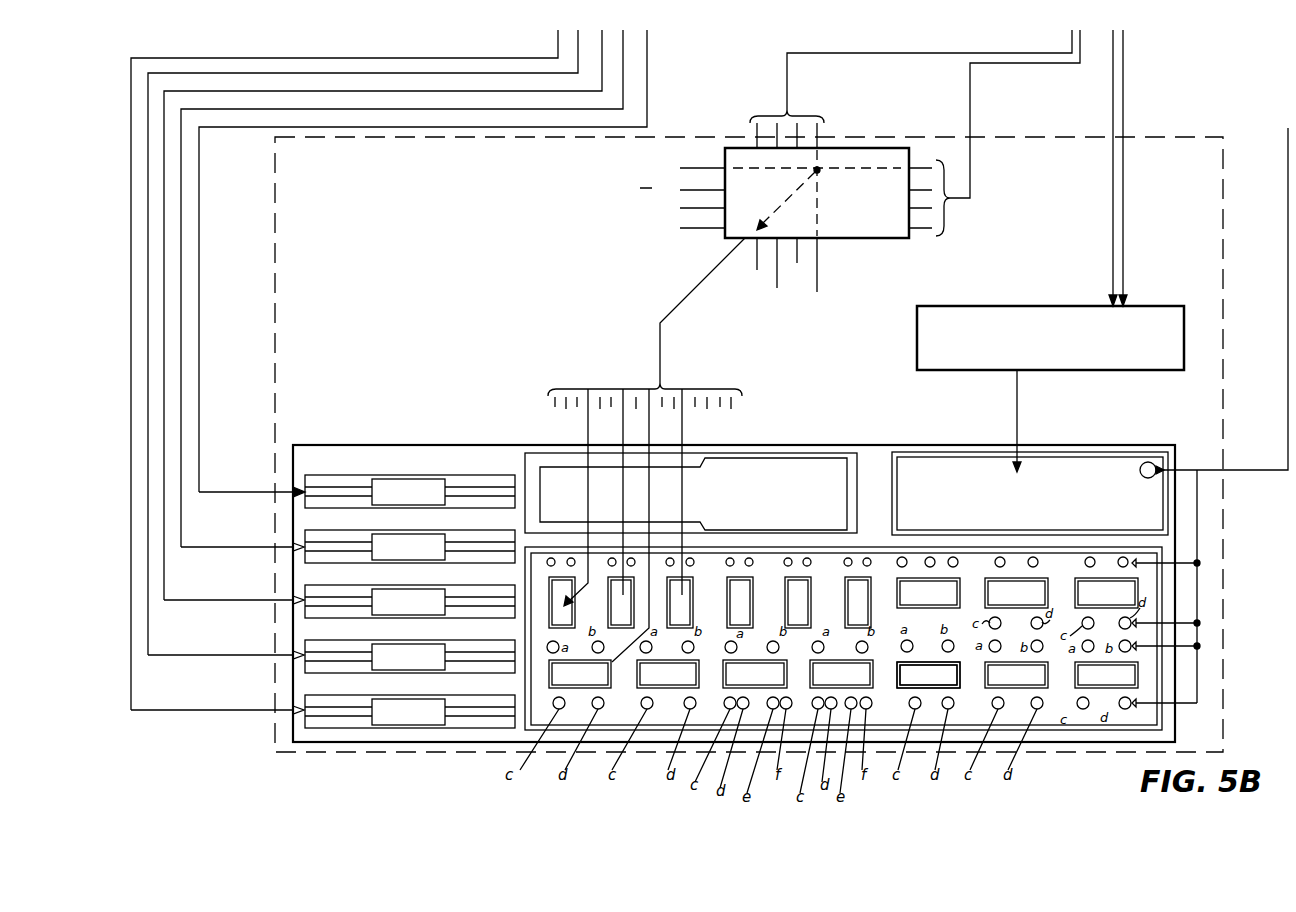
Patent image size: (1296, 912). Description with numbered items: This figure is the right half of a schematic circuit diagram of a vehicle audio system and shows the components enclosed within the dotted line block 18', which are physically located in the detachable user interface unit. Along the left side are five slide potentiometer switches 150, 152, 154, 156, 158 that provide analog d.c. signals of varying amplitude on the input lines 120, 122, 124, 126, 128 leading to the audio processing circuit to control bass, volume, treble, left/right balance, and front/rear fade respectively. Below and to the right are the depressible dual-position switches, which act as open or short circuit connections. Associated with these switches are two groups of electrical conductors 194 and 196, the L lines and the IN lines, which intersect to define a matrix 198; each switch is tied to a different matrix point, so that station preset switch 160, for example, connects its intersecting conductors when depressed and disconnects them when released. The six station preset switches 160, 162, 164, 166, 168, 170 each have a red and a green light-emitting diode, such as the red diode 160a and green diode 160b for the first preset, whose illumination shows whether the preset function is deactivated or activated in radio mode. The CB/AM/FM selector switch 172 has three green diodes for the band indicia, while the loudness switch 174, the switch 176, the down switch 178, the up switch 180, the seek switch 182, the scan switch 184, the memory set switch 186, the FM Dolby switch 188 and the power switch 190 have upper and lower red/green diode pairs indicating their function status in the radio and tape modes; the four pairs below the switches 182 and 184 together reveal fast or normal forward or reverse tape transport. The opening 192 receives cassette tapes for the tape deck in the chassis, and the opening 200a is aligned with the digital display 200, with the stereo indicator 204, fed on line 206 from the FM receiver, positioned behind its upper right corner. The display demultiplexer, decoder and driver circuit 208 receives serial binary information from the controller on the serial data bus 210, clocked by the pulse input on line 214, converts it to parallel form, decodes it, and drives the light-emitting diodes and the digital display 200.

The dotted line block 18' is at (759, 416).
The line 120 is at (190, 666).
The line 122 is at (183, 720).
The line 124 is at (257, 598).
The line 126 is at (210, 556).
The line 128 is at (236, 490).
The slide potentiometer switch 150 is at (410, 491).
The slide potentiometer switch 152 is at (410, 546).
The slide potentiometer switch 154 is at (410, 601).
The slide potentiometer switch 156 is at (410, 656).
The slide potentiometer switch 158 is at (410, 711).
The station preset switch 160 is at (550, 588).
The red light-emitting diode 160a is at (550, 557).
The green light-emitting diode 160b is at (570, 557).
The station preset switch 162 is at (631, 557).
The station preset switch 164 is at (690, 557).
The station preset switch 166 is at (749, 557).
The station preset switch 168 is at (807, 557).
The station preset switch 170 is at (867, 557).
The CB/AM/FM selector switch 172 is at (908, 524).
The loudness switch 174 is at (1014, 526).
The switch 176 is at (1100, 526).
The down switch 178 is at (580, 684).
The up switch 180 is at (668, 684).
The seek switch 182 is at (757, 684).
The scan switch 184 is at (841, 684).
The memory set switch 186 is at (928, 685).
The FM Dolby switch 188 is at (1016, 685).
The power switch 190 is at (1106, 685).
The opening 192 is at (726, 472).
The group of electrical conductors 194 is at (956, 206).
The group of electrical conductors 196 is at (792, 108).
The matrix 198 is at (871, 242).
The digital display 200 is at (958, 472).
The opening 200a is at (928, 452).
The stereo indicator 204 is at (1140, 470).
The line 206 is at (1285, 176).
The display demultiplexer, decoder and driver circuit 208 is at (1015, 308).
The serial data bus 210 is at (1128, 68).
The line 214 is at (1110, 112).